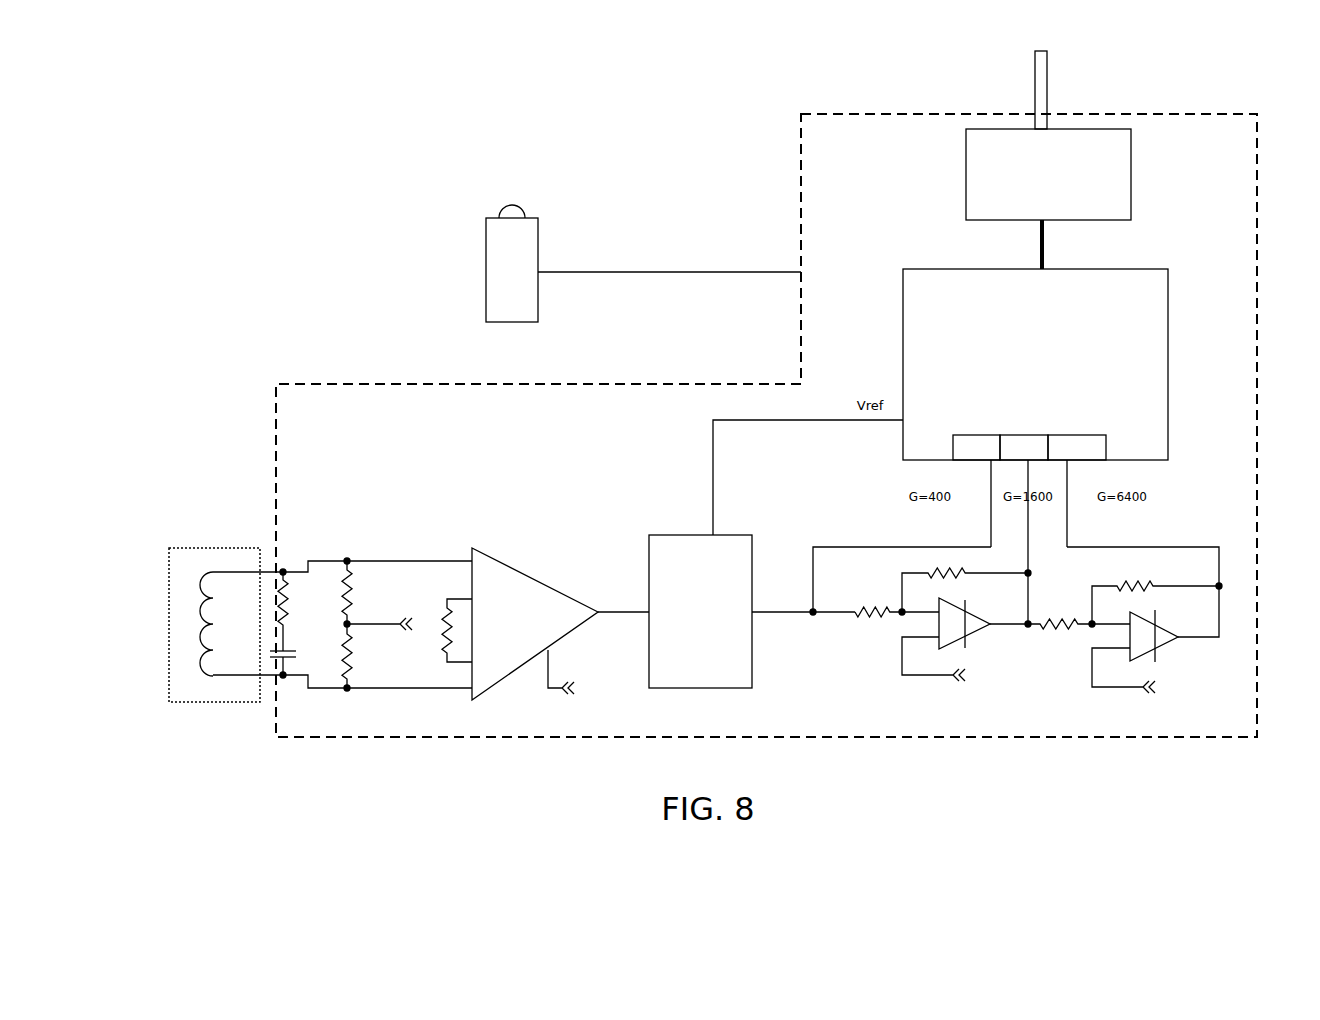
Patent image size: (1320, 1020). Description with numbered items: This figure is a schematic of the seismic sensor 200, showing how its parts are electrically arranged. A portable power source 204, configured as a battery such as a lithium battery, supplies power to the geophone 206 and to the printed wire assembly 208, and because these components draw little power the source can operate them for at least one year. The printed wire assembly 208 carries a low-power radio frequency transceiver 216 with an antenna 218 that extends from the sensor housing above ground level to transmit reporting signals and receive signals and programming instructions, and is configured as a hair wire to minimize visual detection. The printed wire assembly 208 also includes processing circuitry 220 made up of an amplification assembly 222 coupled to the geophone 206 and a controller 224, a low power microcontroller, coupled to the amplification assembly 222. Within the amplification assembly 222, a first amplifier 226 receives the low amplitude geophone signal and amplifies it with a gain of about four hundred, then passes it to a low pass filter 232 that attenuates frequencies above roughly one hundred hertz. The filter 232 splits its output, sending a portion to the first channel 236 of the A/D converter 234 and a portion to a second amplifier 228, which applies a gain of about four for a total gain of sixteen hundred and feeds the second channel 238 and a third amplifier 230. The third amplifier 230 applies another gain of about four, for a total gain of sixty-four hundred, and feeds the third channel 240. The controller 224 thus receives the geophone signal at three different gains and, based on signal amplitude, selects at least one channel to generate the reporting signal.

The seismic sensor 200 is at (742, 130).
The portable power source 204 is at (541, 263).
The geophone 206 is at (205, 702).
The printed wire assembly 208 is at (1163, 98).
The transceiver 216 is at (1048, 199).
The antenna 218 is at (1033, 95).
The processing circuitry 220 is at (803, 640).
The amplification assembly 222 is at (437, 722).
The controller 224 is at (1035, 364).
The first amplifier 226 is at (513, 668).
The second amplifier 228 is at (977, 632).
The third amplifier 230 is at (1162, 645).
The low pass filter 232 is at (700, 611).
The A/D converter 234 is at (1072, 405).
The first A/D converter channel 236 is at (963, 435).
The second A/D converter channel 238 is at (1030, 435).
The third A/D converter channel 240 is at (1073, 435).